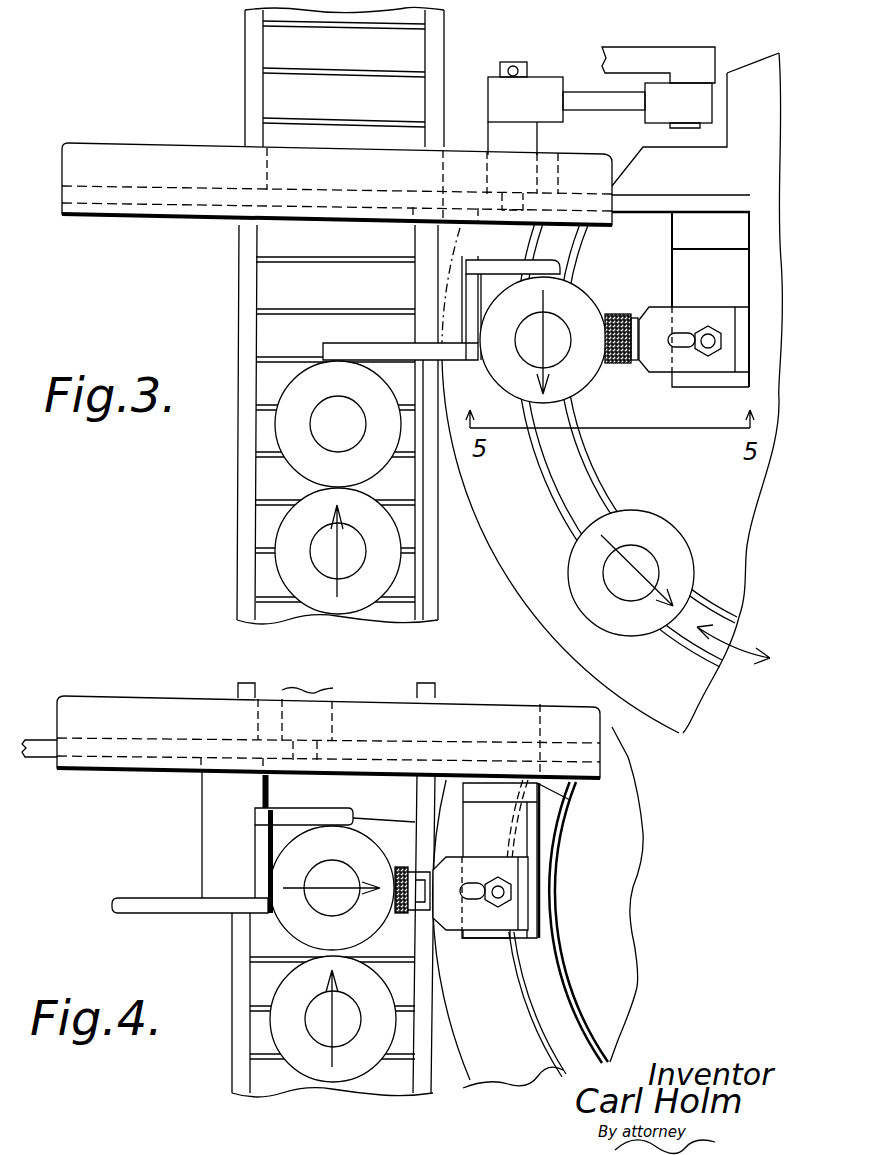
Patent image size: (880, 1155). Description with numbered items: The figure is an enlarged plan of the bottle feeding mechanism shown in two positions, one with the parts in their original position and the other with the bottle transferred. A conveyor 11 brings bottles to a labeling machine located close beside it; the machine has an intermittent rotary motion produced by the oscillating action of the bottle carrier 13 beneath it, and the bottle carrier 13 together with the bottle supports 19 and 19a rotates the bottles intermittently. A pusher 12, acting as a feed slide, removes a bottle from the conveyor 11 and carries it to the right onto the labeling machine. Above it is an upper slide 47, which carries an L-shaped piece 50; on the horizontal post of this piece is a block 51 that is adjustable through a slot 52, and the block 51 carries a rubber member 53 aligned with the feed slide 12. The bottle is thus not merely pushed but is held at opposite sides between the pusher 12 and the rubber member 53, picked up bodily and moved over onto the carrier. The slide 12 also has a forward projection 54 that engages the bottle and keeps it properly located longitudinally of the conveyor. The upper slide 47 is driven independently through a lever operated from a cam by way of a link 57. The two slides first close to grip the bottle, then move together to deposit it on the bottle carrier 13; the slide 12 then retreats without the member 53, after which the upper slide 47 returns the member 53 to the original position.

In FIG. 3, the conveyor 11 is at (405, 58).
In FIG. 4, the conveyor 11 is at (320, 1093).
In FIG. 3, the pusher 12 is at (386, 350).
In FIG. 4, the pusher 12 is at (258, 871).
In FIG. 3, the bottle carrier 13 is at (568, 466).
In FIG. 4, the bottle carrier 13 is at (557, 1030).
In FIG. 3, the bottle support 19 is at (522, 580).
In FIG. 4, the bottle support 19 is at (482, 1068).
In FIG. 3, the bottle support 19a is at (732, 571).
In FIG. 4, the bottle support 19a is at (618, 987).
In FIG. 3, the upper slide 47 is at (660, 192).
In FIG. 4, the upper slide 47 is at (48, 748).
In FIG. 3, the L-shaped piece 50 is at (676, 240).
In FIG. 4, the L-shaped piece 50 is at (530, 838).
In FIG. 3, the block 51 is at (664, 372).
In FIG. 4, the block 51 is at (482, 917).
In FIG. 3, the slot 52 is at (704, 328).
In FIG. 4, the slot 52 is at (473, 880).
In FIG. 3, the rubber member 53 is at (615, 315).
In FIG. 4, the rubber member 53 is at (398, 913).
In FIG. 3, the forward projection 54 is at (501, 270).
In FIG. 4, the forward projection 54 is at (297, 816).
In FIG. 3, the link 57 is at (626, 106).